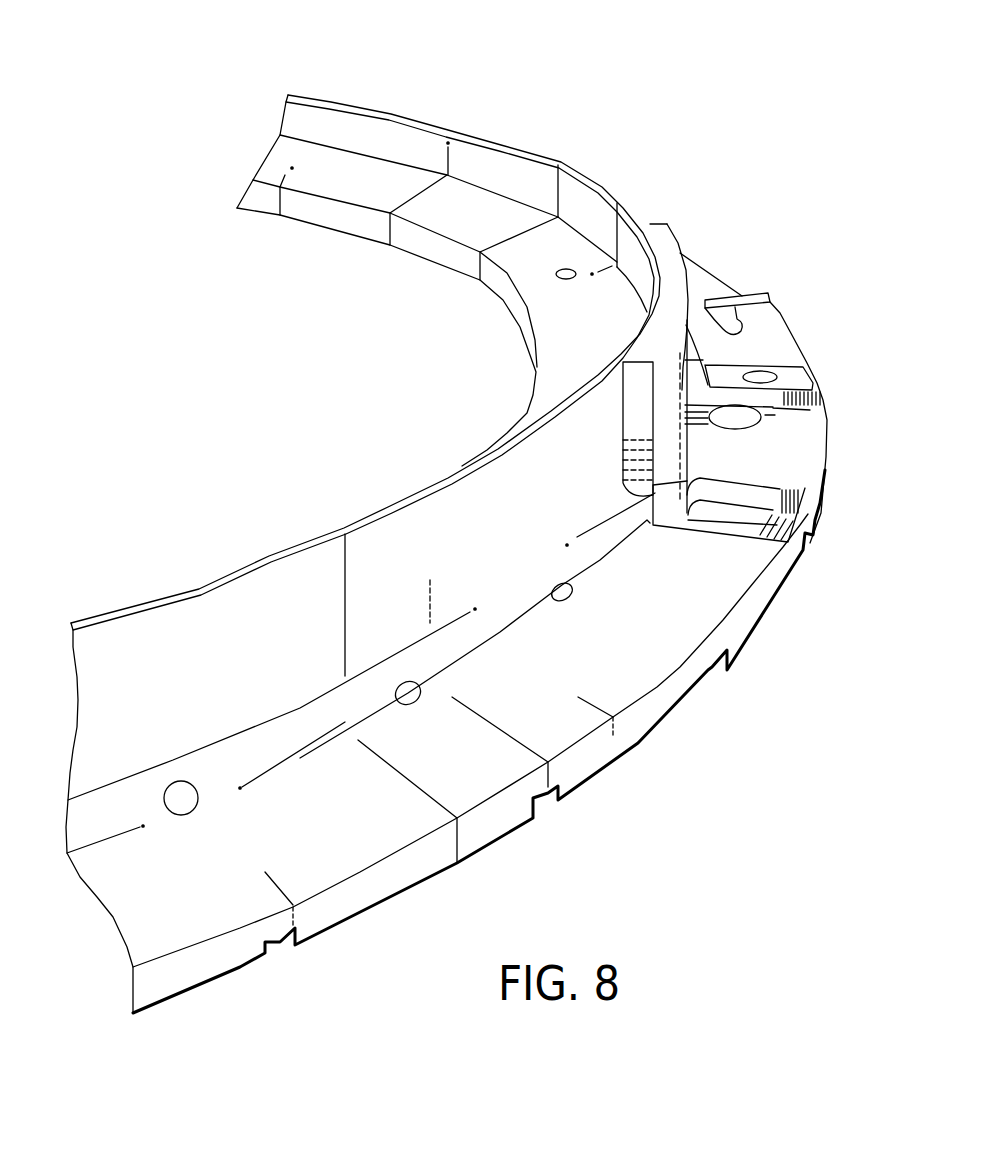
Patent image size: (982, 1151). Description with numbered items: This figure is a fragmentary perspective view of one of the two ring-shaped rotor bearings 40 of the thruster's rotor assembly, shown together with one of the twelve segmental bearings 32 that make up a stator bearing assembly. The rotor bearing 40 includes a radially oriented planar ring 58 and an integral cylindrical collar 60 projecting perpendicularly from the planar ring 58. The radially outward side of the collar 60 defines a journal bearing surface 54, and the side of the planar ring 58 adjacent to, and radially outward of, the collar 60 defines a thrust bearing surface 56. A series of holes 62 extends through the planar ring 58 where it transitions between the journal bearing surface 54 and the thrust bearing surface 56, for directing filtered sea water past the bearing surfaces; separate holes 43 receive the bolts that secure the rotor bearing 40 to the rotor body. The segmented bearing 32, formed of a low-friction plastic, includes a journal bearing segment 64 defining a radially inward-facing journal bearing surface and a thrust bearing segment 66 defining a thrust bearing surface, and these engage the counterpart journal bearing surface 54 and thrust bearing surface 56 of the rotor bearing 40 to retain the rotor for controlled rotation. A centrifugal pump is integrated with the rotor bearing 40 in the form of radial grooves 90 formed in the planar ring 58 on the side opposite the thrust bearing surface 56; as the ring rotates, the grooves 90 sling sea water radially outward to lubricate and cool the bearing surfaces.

The ring-shaped rotor bearing 40 is at (434, 74).
The cylindrical collar 60 is at (560, 153).
The holes 43 is at (568, 283).
The journal bearing segment 64 is at (673, 283).
The segmented bearing 32 is at (784, 448).
The thrust bearing segment 66 is at (795, 472).
The journal bearing surface 54 is at (203, 625).
The holes 62 is at (422, 700).
The thrust bearing surface 56 is at (717, 590).
The planar ring 58 is at (667, 702).
The radial grooves 90 is at (277, 950).